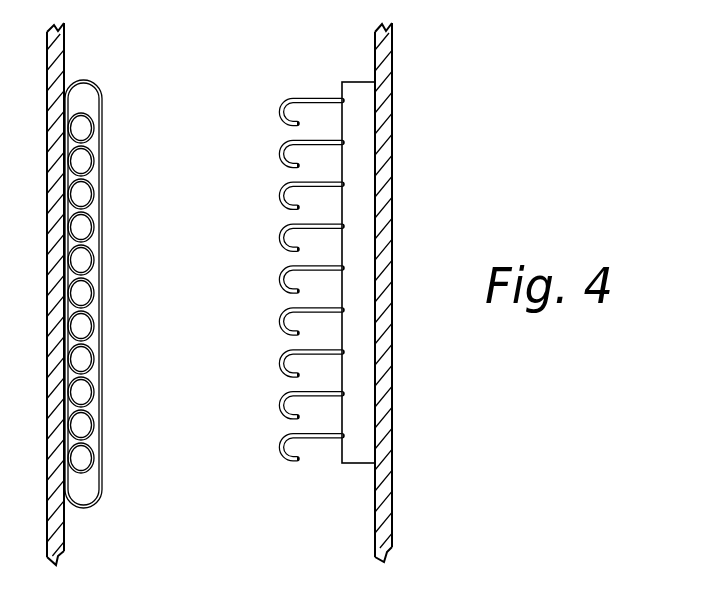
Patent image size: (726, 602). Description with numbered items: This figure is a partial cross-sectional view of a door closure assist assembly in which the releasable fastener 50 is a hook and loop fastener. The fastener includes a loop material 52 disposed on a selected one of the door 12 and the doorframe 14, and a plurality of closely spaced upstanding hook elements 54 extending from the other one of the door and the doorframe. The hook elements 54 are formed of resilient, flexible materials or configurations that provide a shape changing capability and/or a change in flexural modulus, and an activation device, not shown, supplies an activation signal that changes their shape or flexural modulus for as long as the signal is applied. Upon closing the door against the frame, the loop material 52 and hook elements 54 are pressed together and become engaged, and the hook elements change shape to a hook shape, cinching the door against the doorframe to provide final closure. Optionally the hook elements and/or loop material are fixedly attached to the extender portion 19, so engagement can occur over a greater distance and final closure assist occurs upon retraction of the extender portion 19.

The door 12 is at (64, 59).
The loop material 52 is at (102, 345).
The hook elements 54 is at (281, 196).
The extender portion 19 is at (358, 82).
The doorframe 14 is at (377, 514).
The releasable fastener 50 is at (514, 123).